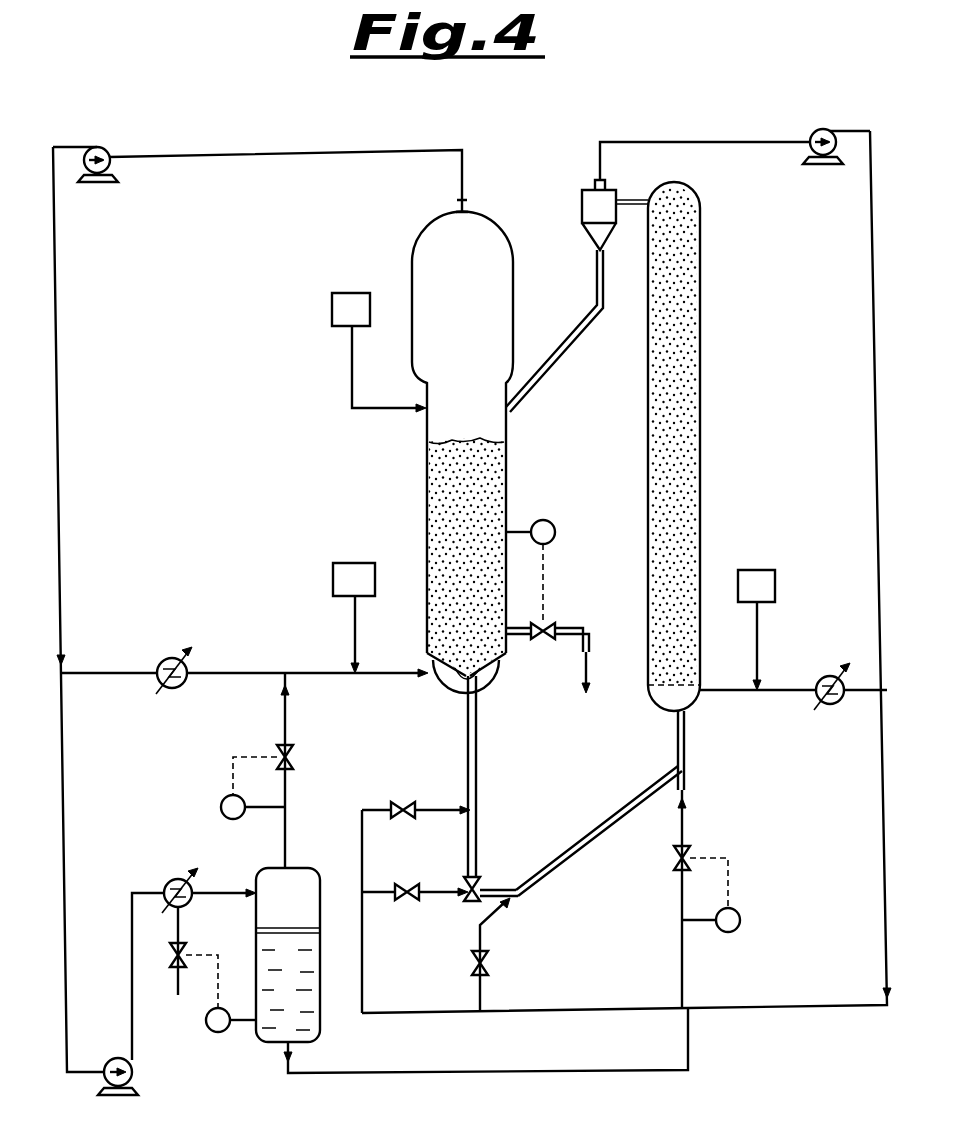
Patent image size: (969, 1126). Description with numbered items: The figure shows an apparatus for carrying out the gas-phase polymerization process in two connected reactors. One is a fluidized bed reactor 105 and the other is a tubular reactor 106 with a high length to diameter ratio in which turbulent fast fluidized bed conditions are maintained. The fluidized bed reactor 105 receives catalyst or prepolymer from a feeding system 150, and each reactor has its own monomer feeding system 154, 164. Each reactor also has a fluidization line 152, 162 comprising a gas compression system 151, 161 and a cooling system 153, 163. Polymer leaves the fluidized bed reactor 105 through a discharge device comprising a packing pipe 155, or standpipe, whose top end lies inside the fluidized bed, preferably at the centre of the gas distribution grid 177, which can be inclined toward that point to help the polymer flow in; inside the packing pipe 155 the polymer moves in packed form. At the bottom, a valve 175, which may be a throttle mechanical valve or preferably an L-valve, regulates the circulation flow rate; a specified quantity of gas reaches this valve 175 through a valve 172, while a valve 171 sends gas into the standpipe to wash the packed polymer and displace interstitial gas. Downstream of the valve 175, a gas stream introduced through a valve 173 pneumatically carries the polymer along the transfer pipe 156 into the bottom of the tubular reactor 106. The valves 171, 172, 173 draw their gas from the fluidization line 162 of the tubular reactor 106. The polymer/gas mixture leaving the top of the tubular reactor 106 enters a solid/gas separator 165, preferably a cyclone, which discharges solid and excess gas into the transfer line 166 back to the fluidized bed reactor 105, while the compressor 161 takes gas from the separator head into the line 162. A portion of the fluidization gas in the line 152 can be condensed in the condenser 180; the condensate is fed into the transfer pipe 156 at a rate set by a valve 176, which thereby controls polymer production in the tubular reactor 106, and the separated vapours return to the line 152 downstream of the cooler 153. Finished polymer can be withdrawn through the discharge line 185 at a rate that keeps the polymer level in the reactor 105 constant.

The fluidized bed reactor 105 is at (513, 302).
The tubular reactor 106 is at (700, 390).
The catalyst or prepolymer feeding system 150 is at (350, 293).
The gas compression system 151 is at (103, 147).
The fluidization line 152 is at (62, 838).
The cooling system 153 is at (163, 662).
The monomer feeding system 154 is at (355, 563).
The packing pipe 155 is at (480, 752).
The transfer pipe 156 is at (640, 800).
The compressor 161 is at (815, 130).
The fluidization line 162 is at (882, 848).
The cooling system 163 is at (822, 680).
The monomer feeding system 164 is at (760, 570).
The solid/gas separator 165 is at (582, 205).
The transfer line 166 is at (552, 368).
The valve 171 is at (402, 802).
The valve 172 is at (408, 900).
The valve 173 is at (492, 962).
The valve 175 is at (484, 882).
The valve 176 is at (692, 850).
The gas distribution grid 177 is at (484, 678).
The condenser 180 is at (322, 985).
The discharge line 185 is at (560, 628).